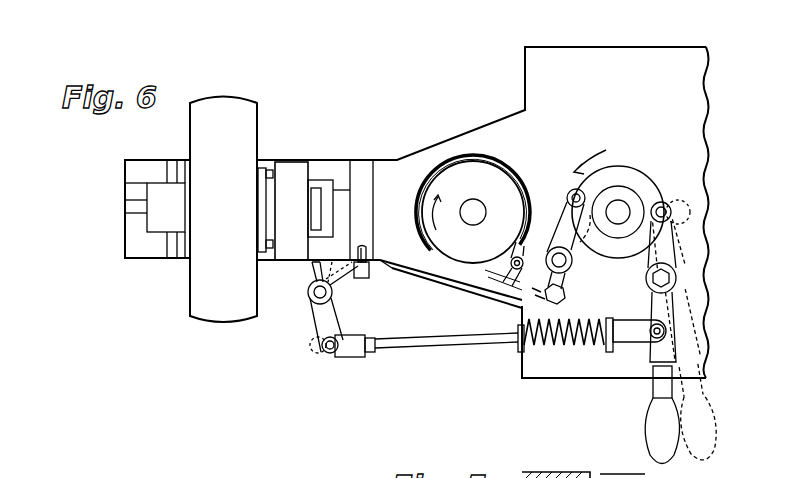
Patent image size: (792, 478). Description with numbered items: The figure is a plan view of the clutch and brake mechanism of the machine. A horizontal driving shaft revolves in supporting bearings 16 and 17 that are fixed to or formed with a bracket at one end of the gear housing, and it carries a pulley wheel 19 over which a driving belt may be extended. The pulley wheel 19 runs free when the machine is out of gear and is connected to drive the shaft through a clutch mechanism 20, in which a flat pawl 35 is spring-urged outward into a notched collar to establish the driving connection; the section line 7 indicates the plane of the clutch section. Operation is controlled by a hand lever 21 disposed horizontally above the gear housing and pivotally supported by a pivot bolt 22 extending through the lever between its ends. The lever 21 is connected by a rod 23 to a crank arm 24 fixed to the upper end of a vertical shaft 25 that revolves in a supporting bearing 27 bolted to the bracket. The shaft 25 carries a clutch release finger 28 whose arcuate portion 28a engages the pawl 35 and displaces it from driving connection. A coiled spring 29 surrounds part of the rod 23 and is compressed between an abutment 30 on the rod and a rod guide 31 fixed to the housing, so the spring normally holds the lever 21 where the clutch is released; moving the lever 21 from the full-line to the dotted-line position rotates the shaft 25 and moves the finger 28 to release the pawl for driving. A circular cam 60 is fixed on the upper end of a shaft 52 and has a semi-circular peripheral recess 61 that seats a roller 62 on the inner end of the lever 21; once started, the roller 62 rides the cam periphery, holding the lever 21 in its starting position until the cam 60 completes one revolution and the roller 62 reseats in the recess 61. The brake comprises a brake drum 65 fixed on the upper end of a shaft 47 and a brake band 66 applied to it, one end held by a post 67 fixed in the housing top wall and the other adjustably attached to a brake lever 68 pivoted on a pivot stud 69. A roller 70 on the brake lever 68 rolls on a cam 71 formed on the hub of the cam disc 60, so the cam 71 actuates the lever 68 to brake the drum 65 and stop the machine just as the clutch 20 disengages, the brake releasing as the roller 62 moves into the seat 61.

The supporting bearing 16 is at (147, 184).
The pulley wheel 19 is at (200, 286).
The supporting bearing 17 is at (340, 192).
The clutch mechanism 20 is at (312, 172).
The flat pawl 35 is at (315, 215).
The section line 7- 7 is at (292, 383).
The shaft 47 is at (486, 200).
The brake band 66 is at (483, 156).
The brake drum 65 is at (452, 178).
The post 67 is at (500, 290).
The brake lever 68 is at (514, 305).
The roller 70 is at (568, 194).
The pivot stud 69 is at (565, 262).
The cam 71 is at (618, 226).
The circular cam 60 is at (646, 180).
The peripheral recess 61 is at (664, 203).
The roller 62 is at (682, 206).
The pivot bolt 22 is at (678, 279).
The hand lever 21 is at (670, 390).
The shaft 52 is at (636, 317).
The abutment 30 is at (606, 355).
The coiled spring 29 is at (560, 348).
The rod guide 31 is at (518, 356).
The rod 23 is at (400, 346).
The crank arm 24 is at (318, 320).
The vertical shaft 25 is at (333, 297).
The clutch release finger 28 is at (314, 276).
The arcuate portion 28a is at (313, 266).
The supporting bearing 27 is at (350, 280).